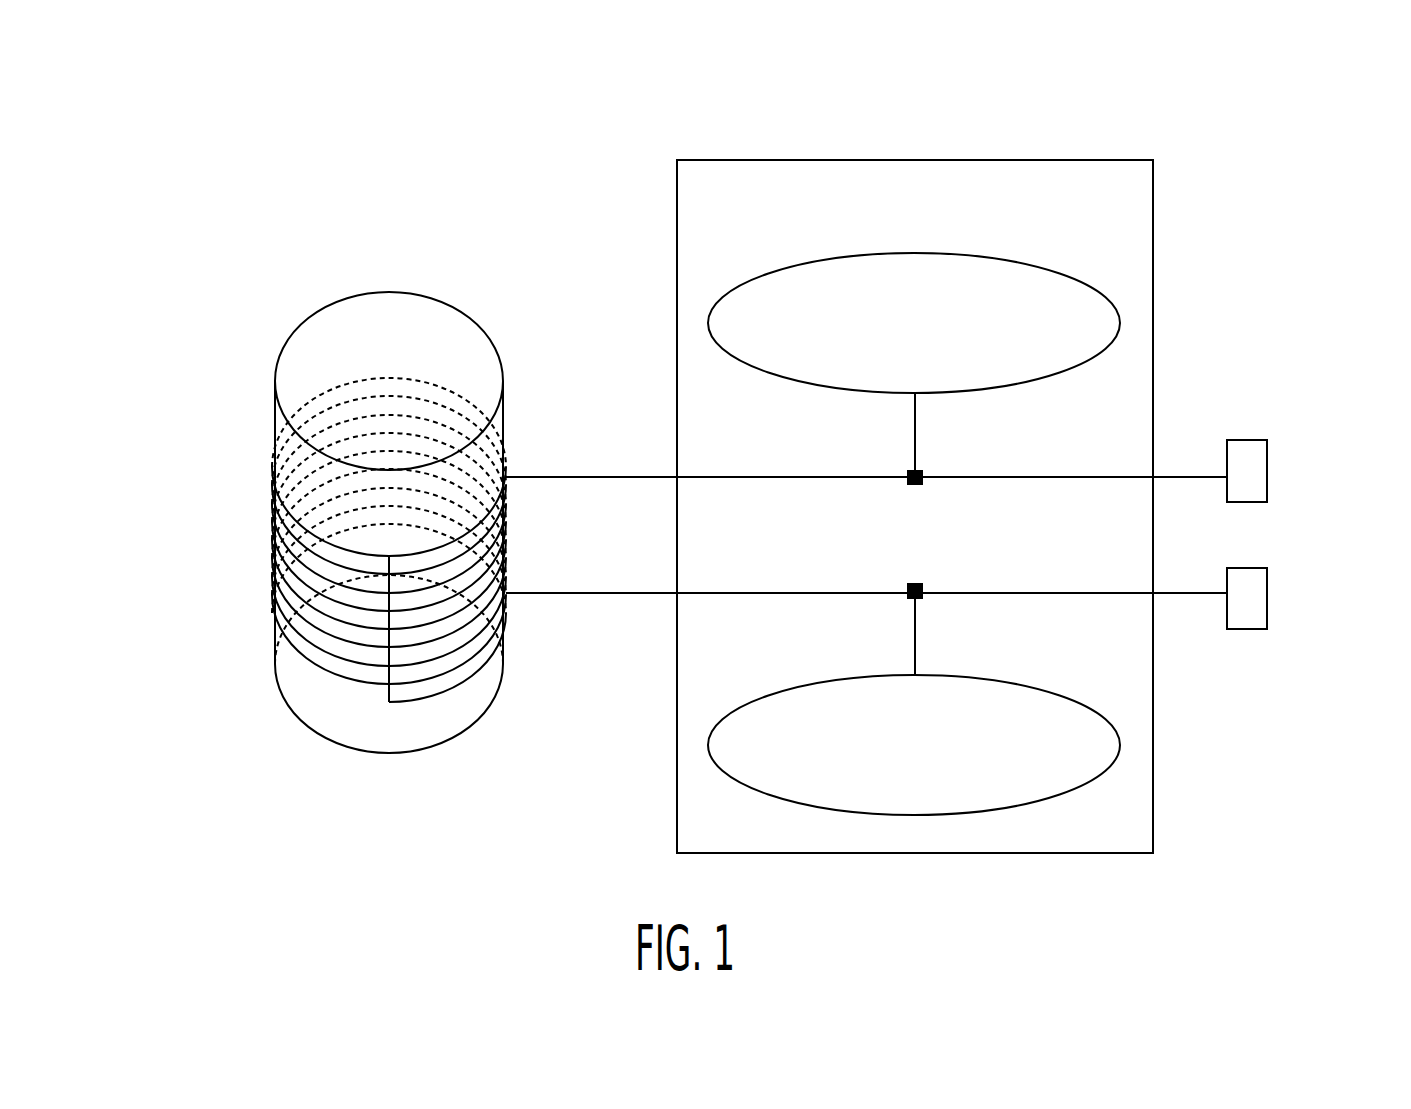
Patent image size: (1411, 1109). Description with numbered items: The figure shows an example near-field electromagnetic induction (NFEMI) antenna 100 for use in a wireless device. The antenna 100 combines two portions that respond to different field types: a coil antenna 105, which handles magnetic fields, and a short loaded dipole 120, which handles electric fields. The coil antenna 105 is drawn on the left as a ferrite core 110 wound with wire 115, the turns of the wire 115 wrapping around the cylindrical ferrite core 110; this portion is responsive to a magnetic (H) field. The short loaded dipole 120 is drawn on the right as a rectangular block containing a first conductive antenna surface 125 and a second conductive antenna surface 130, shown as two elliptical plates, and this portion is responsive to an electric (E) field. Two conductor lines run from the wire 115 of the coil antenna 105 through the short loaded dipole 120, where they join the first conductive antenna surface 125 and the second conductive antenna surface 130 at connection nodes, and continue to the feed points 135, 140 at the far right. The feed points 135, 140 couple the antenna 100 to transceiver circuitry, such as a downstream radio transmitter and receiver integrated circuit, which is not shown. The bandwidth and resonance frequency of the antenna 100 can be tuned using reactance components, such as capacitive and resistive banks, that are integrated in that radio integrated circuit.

The near-field electromagnetic induction (NFEMI) antenna 100 is at (99, 144).
The coil antenna 105 is at (200, 296).
The ferrite core 110 is at (430, 296).
The wire 115 is at (272, 570).
The short loaded dipole 120 is at (1153, 222).
The first conductive antenna surface 125 is at (985, 254).
The second conductive antenna surface 130 is at (1044, 690).
The feed point 135 is at (1267, 477).
The feed point 140 is at (1267, 593).